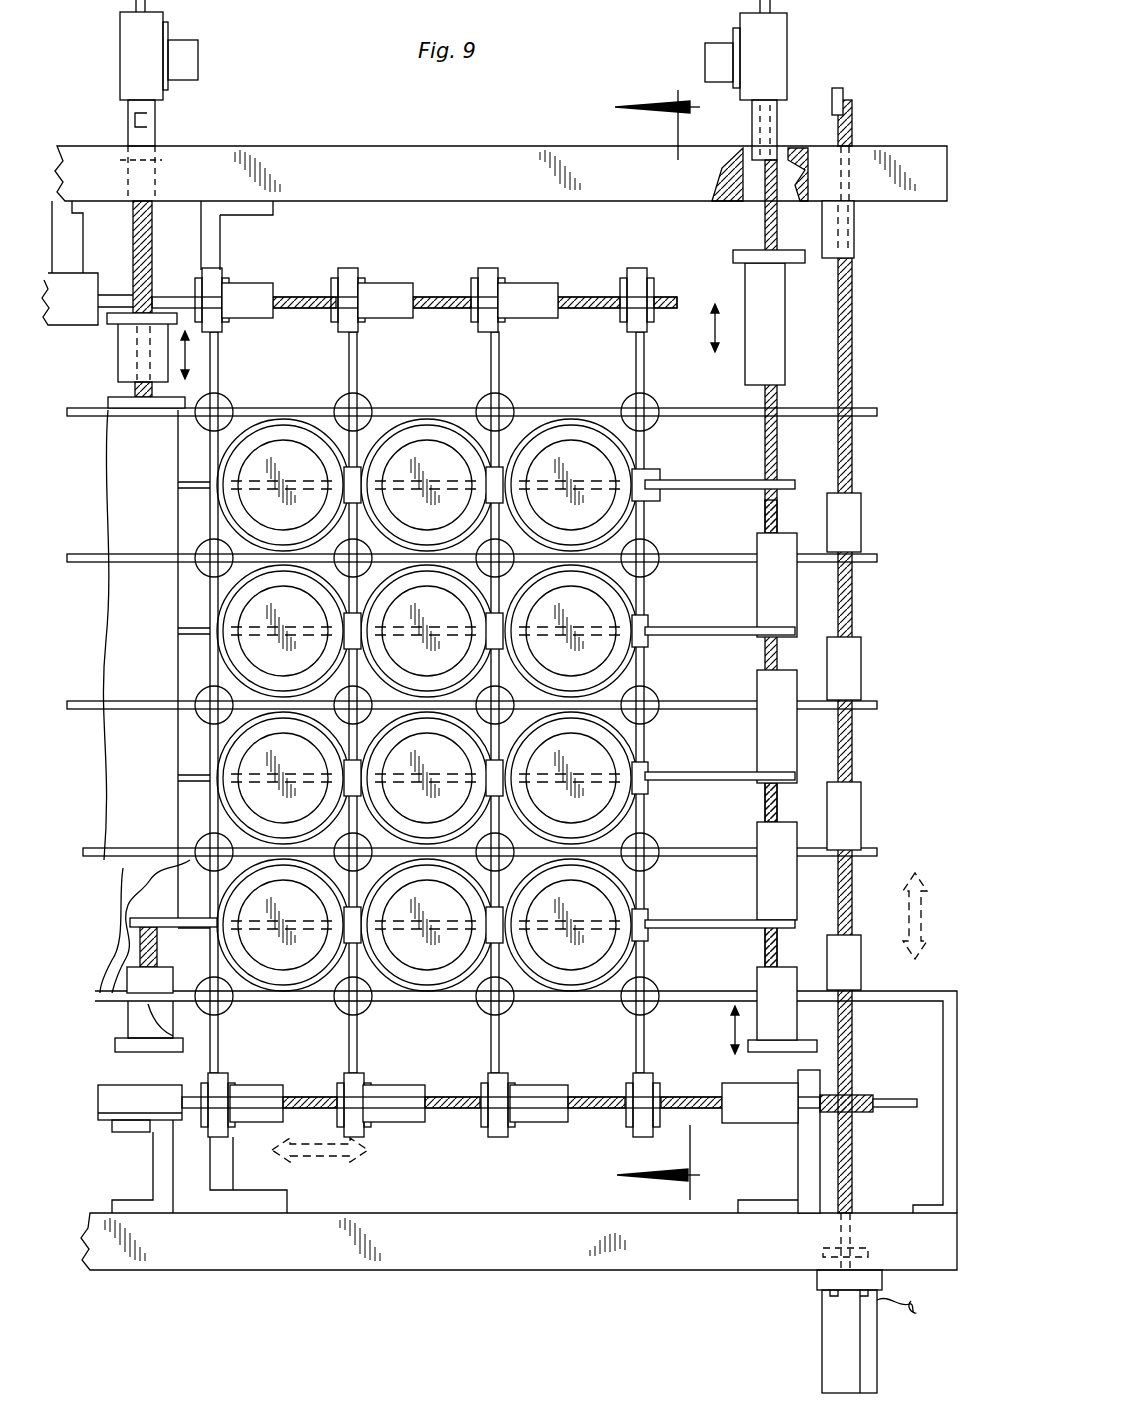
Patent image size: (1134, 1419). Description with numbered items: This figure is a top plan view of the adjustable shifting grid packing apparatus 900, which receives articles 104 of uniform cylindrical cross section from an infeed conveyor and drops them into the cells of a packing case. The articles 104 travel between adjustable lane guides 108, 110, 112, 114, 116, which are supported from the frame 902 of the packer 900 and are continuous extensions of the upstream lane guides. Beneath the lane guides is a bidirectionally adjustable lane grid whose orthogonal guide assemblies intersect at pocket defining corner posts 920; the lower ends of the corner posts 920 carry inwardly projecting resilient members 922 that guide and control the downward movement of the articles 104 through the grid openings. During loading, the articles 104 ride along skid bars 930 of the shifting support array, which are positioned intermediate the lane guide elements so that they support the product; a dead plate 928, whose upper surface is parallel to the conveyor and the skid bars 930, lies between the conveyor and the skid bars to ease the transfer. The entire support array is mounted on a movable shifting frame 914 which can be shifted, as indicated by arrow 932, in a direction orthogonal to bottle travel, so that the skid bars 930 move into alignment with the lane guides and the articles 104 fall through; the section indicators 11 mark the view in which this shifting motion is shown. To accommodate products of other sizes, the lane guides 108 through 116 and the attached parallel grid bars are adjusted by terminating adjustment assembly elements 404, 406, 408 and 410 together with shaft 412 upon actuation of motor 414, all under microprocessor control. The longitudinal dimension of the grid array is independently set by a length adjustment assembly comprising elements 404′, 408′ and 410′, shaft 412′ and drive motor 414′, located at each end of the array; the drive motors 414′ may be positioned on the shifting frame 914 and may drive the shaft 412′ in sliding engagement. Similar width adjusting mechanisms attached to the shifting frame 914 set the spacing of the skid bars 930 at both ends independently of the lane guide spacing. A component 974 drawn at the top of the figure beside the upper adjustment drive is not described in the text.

The adjustable shifting grid packing apparatus 900 is at (330, 128).
The frame 902 is at (935, 146).
The articles 104 is at (287, 450).
The inwardly projecting resilient members 922 is at (612, 418).
The dead plate 928 is at (145, 701).
The skid bars 930 is at (714, 490).
The pocket defining corner posts 920 is at (765, 790).
The arrow 932 is at (705, 1030).
The shifting frame 914 is at (712, 48).
The encoder 974 is at (195, 53).
The adjustable lane guide 108 is at (190, 1052).
The adjustable lane guide 110 is at (100, 848).
The adjustable lane guide 112 is at (98, 690).
The adjustable lane guide 114 is at (98, 555).
The adjustable lane guide 116 is at (98, 418).
The terminating adjustment assembly element 404 is at (853, 520).
The length adjustment assembly element 404′ is at (252, 1085).
The terminating adjustment assembly element 406 is at (856, 225).
The terminating adjustment assembly element 408 is at (852, 466).
The length adjustment assembly element 408′ is at (315, 1085).
The terminating adjustment assembly element 410 is at (852, 330).
The length adjustment assembly element 410′ is at (705, 1110).
The shaft 412 is at (842, 102).
The shaft 412′ is at (900, 1098).
The motor 414 is at (822, 1338).
The drive motor 414′ is at (135, 1105).
The section line 11- 11 is at (668, 92).